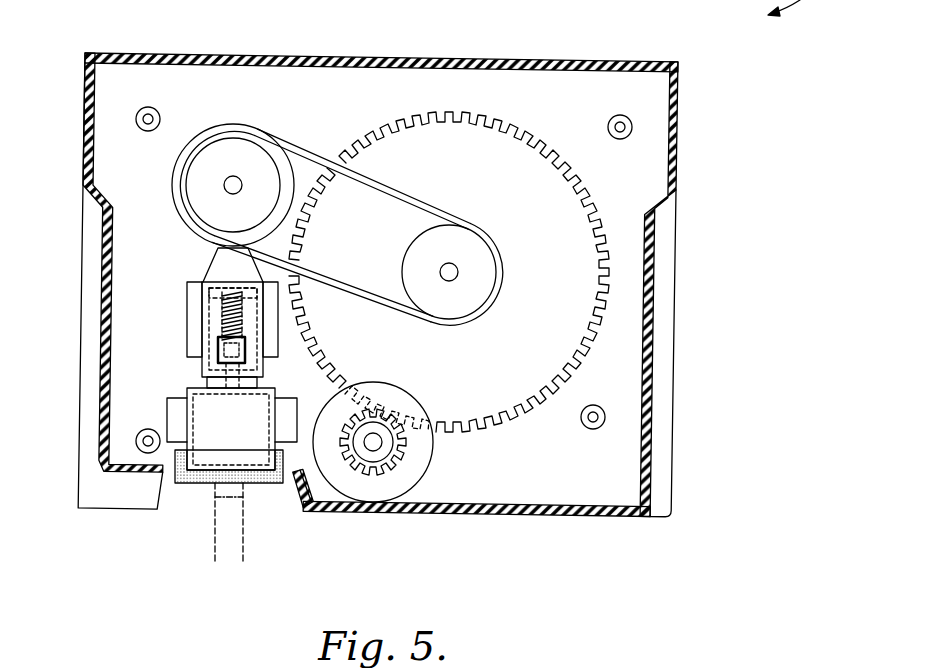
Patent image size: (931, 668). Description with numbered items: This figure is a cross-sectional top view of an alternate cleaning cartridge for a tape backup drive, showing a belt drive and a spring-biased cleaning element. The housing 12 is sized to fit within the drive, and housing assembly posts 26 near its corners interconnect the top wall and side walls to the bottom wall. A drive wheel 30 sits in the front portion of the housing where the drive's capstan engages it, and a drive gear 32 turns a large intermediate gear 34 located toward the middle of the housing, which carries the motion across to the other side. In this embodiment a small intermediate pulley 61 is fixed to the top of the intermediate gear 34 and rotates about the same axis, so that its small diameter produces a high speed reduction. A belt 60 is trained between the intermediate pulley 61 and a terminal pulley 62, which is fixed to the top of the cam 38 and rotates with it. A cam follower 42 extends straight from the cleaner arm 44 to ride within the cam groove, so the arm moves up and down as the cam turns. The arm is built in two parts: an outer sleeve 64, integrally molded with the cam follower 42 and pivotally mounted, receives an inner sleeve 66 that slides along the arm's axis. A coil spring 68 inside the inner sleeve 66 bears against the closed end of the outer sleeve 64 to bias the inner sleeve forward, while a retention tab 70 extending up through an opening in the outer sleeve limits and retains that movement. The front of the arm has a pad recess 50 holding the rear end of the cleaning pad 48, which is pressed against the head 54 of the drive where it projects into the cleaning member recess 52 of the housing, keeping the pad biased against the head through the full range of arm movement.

The housing 12 is at (678, 152).
The housing assembly posts 26 is at (142, 108).
The drive wheel 30 is at (407, 482).
The drive gear 32 is at (368, 472).
The intermediate gear 34 is at (557, 337).
The cam 38 is at (172, 193).
The cam follower 42 is at (212, 262).
The cleaner arm 44 is at (180, 378).
The cleaning pad 48 is at (193, 487).
The pad recess 50 is at (185, 422).
The cleaning member recess 52 is at (292, 494).
The head 54 is at (228, 532).
The belt 60 is at (295, 157).
The intermediate pulley 61 is at (448, 235).
The terminal pulley 62 is at (232, 148).
The outer sleeve 64 is at (197, 303).
The inner sleeve 66 is at (220, 330).
The coil spring 68 is at (213, 272).
The retention tab 70 is at (218, 345).